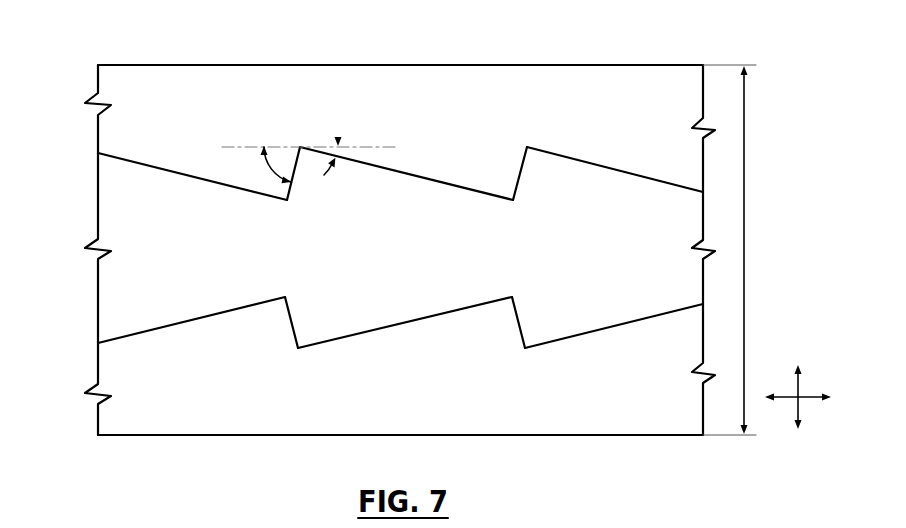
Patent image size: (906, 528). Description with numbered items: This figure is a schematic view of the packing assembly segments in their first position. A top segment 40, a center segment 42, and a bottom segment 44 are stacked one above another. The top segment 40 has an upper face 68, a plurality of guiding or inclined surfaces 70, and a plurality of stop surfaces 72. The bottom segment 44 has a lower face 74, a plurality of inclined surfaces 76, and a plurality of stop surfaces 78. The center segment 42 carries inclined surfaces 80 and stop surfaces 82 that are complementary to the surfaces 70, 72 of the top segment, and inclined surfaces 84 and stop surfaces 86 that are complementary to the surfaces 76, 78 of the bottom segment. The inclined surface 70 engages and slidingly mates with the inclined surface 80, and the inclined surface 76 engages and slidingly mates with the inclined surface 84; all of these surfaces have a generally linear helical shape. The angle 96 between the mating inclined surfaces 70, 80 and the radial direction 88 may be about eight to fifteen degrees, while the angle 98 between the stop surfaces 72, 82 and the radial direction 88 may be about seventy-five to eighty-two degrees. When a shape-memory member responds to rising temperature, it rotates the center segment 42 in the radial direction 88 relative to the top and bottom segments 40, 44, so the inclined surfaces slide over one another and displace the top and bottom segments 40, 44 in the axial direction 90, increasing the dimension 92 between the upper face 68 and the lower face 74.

The top segment 40 is at (112, 128).
The center segment 42 is at (125, 207).
The bottom segment 44 is at (116, 372).
The upper face 68 is at (517, 58).
The inclined surfaces 70 is at (400, 187).
The stop surfaces 72 is at (407, 187).
The lower face 74 is at (540, 447).
The inclined surfaces 76 is at (400, 304).
The stop surfaces 78 is at (405, 304).
The inclined surfaces 80 is at (443, 183).
The stop surfaces 82 is at (295, 170).
The inclined surfaces 84 is at (427, 318).
The stop surfaces 86 is at (291, 316).
The radial direction 88 is at (806, 400).
The axial direction 90 is at (800, 388).
The dimension 92 is at (744, 258).
The angle 96 is at (338, 137).
The angle 98 is at (282, 180).